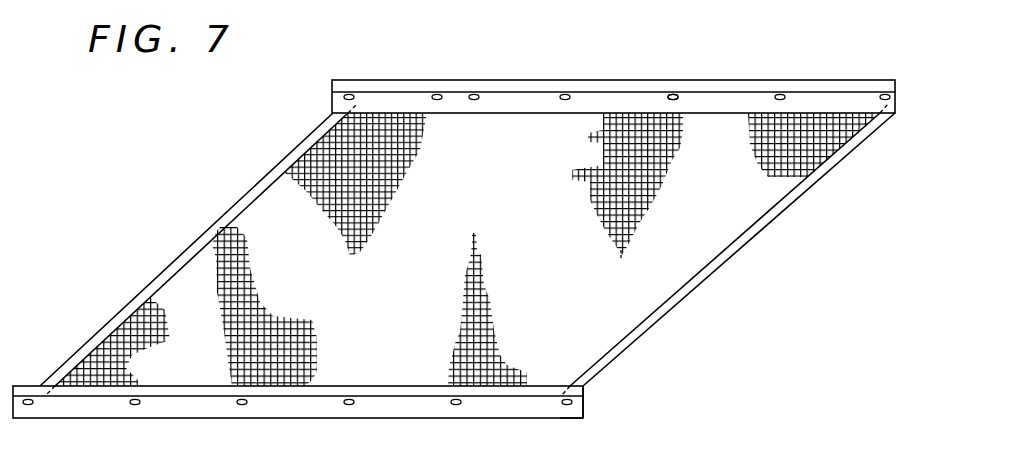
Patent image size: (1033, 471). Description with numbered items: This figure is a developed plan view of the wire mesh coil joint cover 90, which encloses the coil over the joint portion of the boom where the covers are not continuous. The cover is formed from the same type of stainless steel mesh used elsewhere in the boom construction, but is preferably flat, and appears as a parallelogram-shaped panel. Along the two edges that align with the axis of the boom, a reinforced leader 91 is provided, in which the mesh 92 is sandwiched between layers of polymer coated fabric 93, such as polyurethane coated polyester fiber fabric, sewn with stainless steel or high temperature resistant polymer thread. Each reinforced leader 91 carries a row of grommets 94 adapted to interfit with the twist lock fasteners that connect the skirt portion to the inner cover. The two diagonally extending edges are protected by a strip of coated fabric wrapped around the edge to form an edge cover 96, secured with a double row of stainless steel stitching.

The wire mesh coil joint cover 90 is at (705, 296).
The reinforced leader 91 is at (492, 72).
The mesh 92 is at (498, 222).
The polymer coated fabric 93 is at (552, 422).
The grommets 94 is at (675, 93).
The edge cover 96 is at (222, 219).